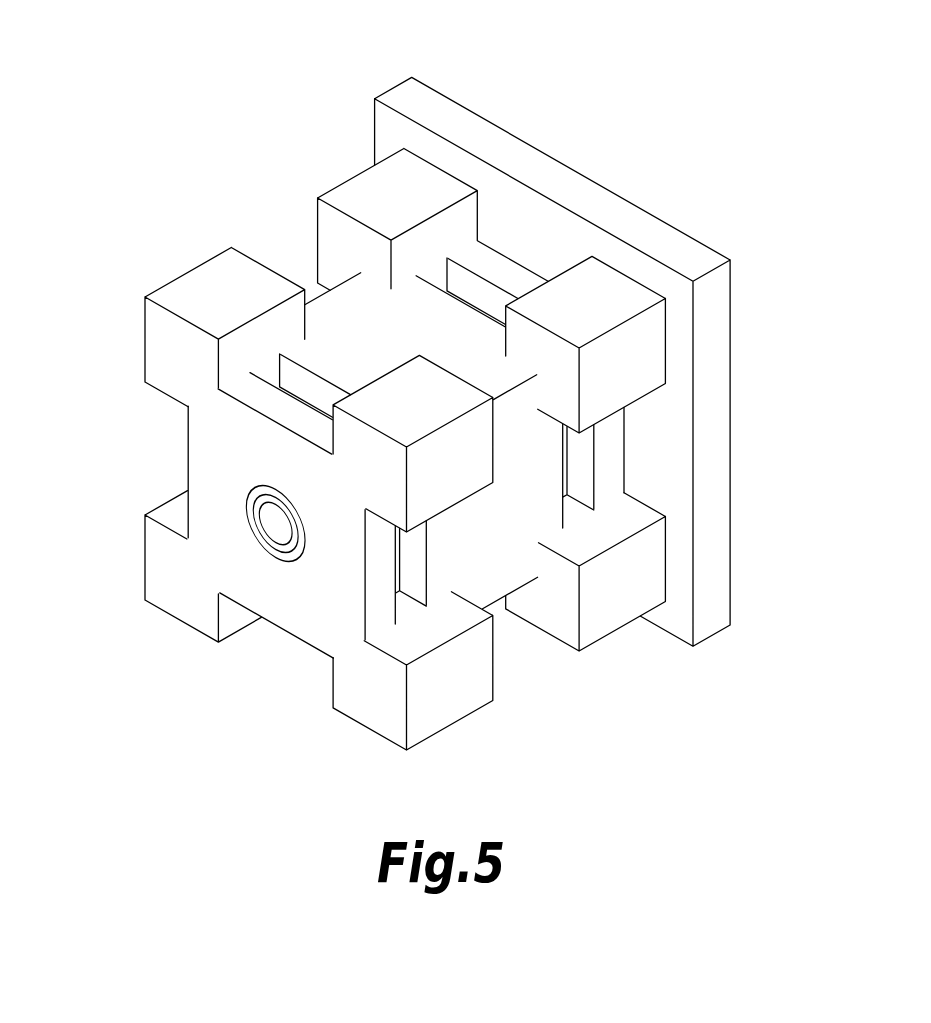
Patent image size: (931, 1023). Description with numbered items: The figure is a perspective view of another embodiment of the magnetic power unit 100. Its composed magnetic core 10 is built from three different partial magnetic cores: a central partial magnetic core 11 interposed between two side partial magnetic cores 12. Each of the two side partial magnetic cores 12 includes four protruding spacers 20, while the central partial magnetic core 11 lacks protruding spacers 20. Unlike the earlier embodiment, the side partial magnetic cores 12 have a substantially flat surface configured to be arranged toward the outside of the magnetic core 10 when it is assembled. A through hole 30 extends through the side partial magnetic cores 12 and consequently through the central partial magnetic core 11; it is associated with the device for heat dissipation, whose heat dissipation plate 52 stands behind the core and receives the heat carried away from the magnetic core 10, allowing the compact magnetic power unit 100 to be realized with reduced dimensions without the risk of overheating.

The magnetic power unit 100 is at (172, 114).
The heat dissipation plate 52 is at (443, 97).
The magnetic core 10 is at (177, 645).
The central partial magnetic core 11 is at (512, 567).
The side partial magnetic core 12 is at (215, 453).
The protruding spacer 20 is at (358, 192).
The through hole 30 is at (250, 547).